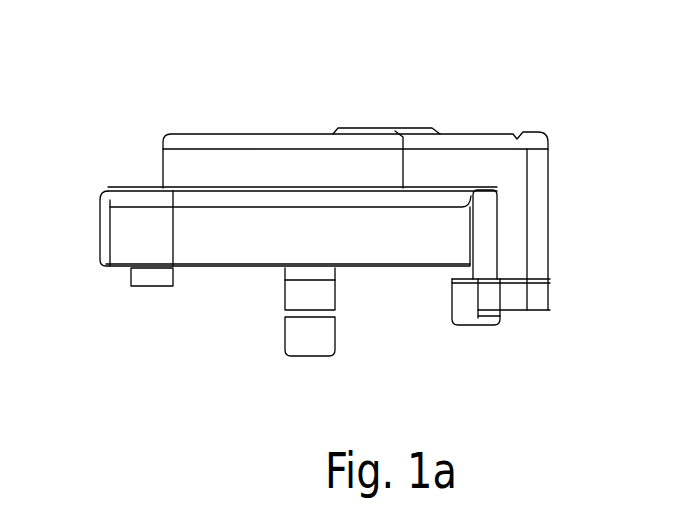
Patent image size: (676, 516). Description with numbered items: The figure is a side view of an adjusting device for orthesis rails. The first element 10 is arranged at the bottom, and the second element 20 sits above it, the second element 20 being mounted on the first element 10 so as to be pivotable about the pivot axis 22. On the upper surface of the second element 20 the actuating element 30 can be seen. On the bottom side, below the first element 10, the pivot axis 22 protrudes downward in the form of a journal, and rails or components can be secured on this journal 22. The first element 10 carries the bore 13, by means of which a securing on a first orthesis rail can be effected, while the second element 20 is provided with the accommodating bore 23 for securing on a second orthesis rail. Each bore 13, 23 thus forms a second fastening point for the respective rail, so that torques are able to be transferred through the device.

The first element 10 is at (102, 237).
The bore 13 is at (147, 288).
The second element 20 is at (477, 133).
The pivot axis 22 is at (310, 358).
The accommodating bore 23 is at (517, 315).
The actuating element 30 is at (375, 127).